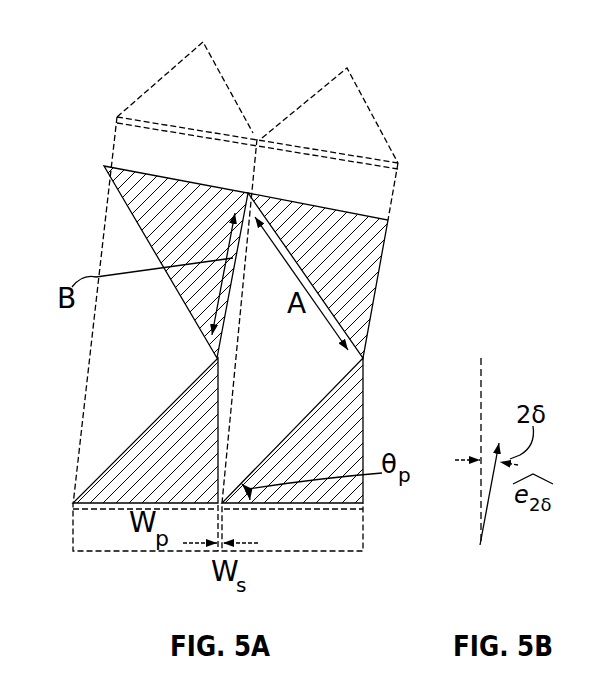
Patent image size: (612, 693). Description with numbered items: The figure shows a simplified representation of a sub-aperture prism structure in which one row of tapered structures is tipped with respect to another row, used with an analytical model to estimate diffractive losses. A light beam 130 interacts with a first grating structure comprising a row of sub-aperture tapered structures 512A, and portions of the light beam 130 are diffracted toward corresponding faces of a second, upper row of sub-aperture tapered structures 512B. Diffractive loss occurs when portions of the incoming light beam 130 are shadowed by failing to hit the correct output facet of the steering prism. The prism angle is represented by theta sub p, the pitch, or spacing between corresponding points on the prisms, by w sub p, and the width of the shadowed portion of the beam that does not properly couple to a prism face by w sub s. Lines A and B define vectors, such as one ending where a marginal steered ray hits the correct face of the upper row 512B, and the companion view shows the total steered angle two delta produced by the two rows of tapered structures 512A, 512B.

The light beam 130 is at (177, 66).
The sub-aperture tapered structures 512A is at (112, 487).
The sub-aperture tapered structures 512B is at (110, 187).